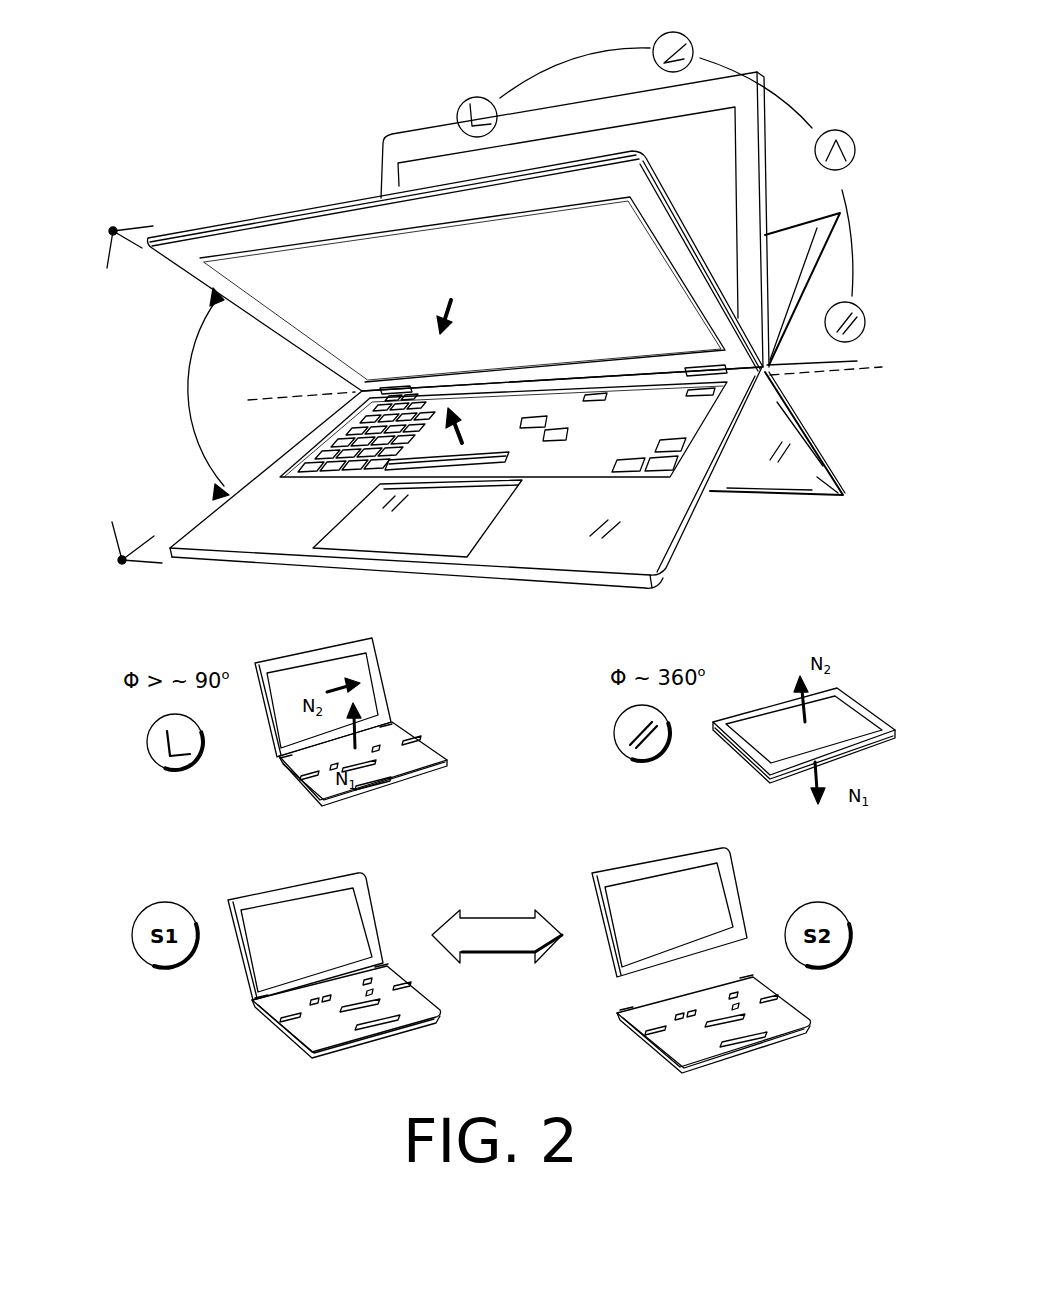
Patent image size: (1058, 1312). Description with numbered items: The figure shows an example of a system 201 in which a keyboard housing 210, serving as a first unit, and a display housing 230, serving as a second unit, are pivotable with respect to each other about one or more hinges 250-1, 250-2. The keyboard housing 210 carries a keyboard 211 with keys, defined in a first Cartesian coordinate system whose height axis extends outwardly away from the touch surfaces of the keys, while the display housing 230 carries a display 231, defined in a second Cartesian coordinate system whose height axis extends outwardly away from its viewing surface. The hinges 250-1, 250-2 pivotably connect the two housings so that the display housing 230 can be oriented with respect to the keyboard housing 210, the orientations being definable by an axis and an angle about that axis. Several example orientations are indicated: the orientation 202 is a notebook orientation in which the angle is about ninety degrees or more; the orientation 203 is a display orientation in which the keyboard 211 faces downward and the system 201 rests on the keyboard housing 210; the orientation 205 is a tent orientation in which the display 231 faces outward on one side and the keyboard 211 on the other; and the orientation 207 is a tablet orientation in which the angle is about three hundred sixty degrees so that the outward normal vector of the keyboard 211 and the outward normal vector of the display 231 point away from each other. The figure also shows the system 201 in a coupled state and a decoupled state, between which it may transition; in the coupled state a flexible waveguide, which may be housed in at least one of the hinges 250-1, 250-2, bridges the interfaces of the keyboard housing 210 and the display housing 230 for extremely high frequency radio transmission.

The system 201 is at (312, 116).
The orientation 202 is at (460, 103).
The orientation 203 is at (658, 40).
The orientation 205 is at (851, 140).
The orientation 207 is at (860, 310).
The keyboard housing 210 is at (238, 568).
The keyboard 211 is at (503, 431).
The display housing 230 is at (230, 218).
The display 231 is at (462, 290).
The hinge 250-1 is at (404, 382).
The hinge 250-2 is at (688, 366).